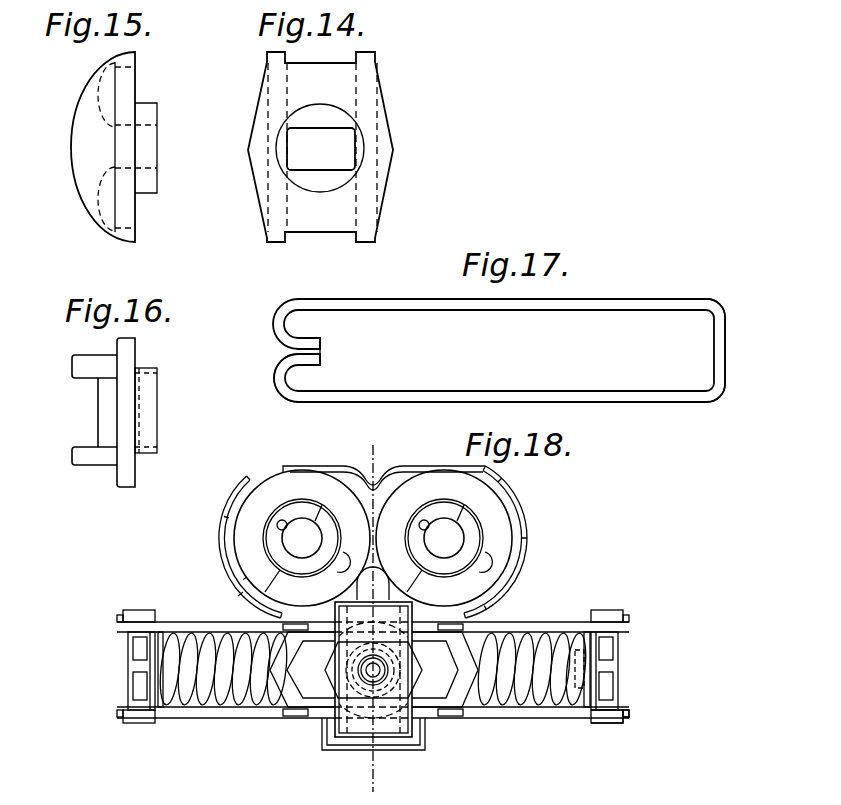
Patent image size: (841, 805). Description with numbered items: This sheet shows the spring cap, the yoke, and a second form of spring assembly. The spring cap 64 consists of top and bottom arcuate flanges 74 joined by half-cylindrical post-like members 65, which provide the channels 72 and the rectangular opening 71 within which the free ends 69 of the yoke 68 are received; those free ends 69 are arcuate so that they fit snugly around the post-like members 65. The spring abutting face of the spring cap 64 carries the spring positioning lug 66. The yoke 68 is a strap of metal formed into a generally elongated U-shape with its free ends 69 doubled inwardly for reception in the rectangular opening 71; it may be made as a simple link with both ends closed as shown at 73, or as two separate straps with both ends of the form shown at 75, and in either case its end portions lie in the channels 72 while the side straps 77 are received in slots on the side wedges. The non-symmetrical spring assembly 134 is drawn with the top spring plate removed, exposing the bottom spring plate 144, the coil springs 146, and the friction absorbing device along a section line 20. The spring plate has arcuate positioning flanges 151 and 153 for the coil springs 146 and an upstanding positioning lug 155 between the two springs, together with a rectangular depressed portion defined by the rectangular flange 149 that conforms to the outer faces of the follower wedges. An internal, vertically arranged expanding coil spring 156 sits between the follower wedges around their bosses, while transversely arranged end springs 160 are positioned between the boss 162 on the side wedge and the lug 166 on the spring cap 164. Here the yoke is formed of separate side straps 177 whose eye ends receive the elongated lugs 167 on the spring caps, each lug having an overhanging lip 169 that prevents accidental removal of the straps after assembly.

In FIG. 18, the section line 20- 20 is at (392, 458).
In FIG. 15, the spring cap 64 is at (86, 122).
In FIG. 14, the spring cap 64 is at (382, 107).
In FIG. 16, the spring cap 64 is at (141, 377).
In FIG. 14, the post-like members 65 is at (308, 72).
In FIG. 16, the post-like members 65 is at (107, 425).
In FIG. 15, the spring positioning lug 66 is at (143, 108).
In FIG. 16, the spring positioning lug 66 is at (150, 452).
In FIG. 17, the yoke 68 is at (586, 307).
In FIG. 17, the free ends 69 is at (303, 344).
In FIG. 14, the rectangular opening 71 is at (343, 166).
In FIG. 14, the channels 72 is at (343, 63).
In FIG. 16, the channels 72 is at (98, 396).
In FIG. 17, the closed ends 73 is at (721, 343).
In FIG. 15, the arcuate flanges 74 is at (84, 182).
In FIG. 16, the arcuate flanges 74 is at (80, 368).
In FIG. 17, the open end form 75 is at (279, 377).
In FIG. 17, the side straps 77 is at (498, 304).
In FIG. 18, the spring assembly 134 is at (472, 612).
In FIG. 18, the bottom spring plate 144 is at (346, 750).
In FIG. 18, the coil springs 146 is at (262, 503).
In FIG. 18, the rectangular flange 149 is at (416, 744).
In FIG. 18, the arcuate positioning flange 151 is at (413, 470).
In FIG. 18, the arcuate positioning flange 153 is at (226, 532).
In FIG. 18, the upstanding positioning lug 155 is at (378, 586).
In FIG. 18, the internal expanding coil spring 156 is at (320, 720).
In FIG. 18, the end springs 160 is at (210, 702).
In FIG. 18, the boss 162 is at (464, 708).
In FIG. 18, the spring cap 164 is at (604, 663).
In FIG. 18, the lug 166 is at (586, 690).
In FIG. 18, the elongated lugs 167 is at (602, 727).
In FIG. 18, the overhanging lip 169 is at (613, 722).
In FIG. 18, the side straps 177 is at (545, 623).